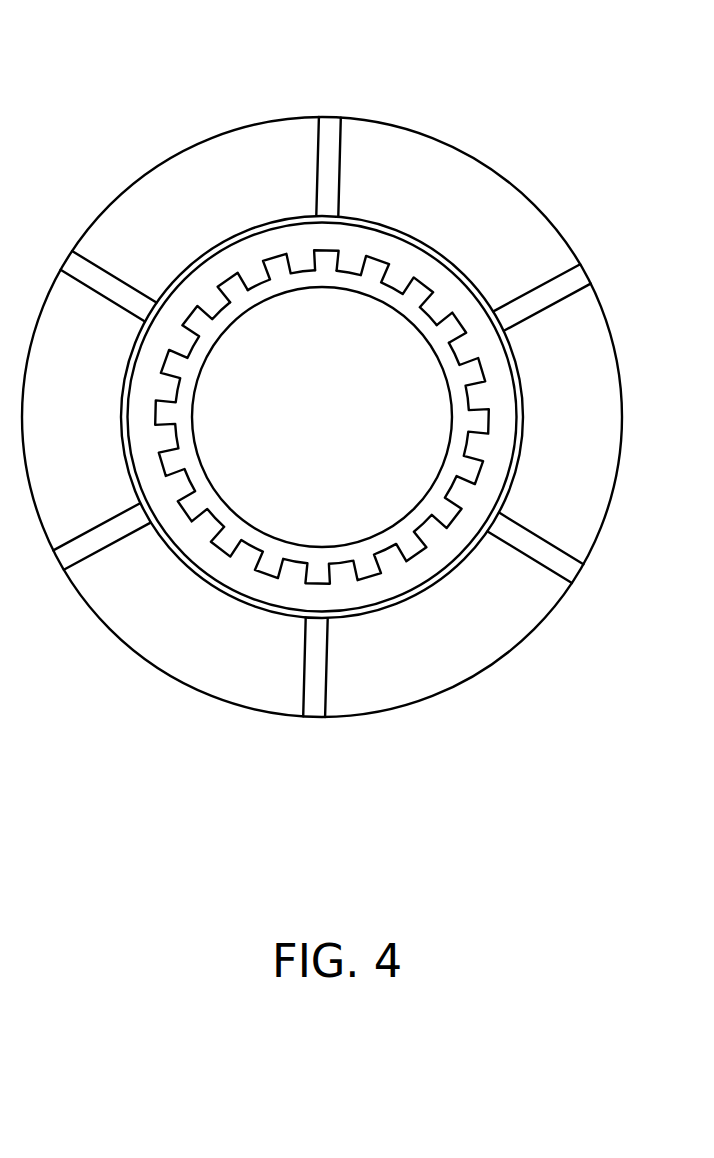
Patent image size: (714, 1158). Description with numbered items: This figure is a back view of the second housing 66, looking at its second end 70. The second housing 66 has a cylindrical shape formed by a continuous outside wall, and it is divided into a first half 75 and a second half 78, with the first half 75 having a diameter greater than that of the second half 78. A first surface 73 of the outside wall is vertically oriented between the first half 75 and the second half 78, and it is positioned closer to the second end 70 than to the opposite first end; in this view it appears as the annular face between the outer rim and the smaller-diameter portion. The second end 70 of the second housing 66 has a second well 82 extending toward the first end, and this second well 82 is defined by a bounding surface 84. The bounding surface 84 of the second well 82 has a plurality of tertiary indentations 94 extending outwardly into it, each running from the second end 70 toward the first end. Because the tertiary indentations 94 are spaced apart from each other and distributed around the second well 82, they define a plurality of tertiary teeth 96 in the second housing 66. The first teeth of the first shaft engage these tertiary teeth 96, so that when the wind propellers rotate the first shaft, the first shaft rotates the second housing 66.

The second housing 66 is at (455, 147).
The second end 70 is at (412, 599).
The first surface 73 is at (207, 183).
The first half 75 is at (118, 190).
The second half 78 is at (478, 265).
The second well 82 is at (282, 493).
The bounding surface 84 is at (300, 278).
The tertiary indentations 94 is at (233, 280).
The tertiary teeth 96 is at (438, 317).